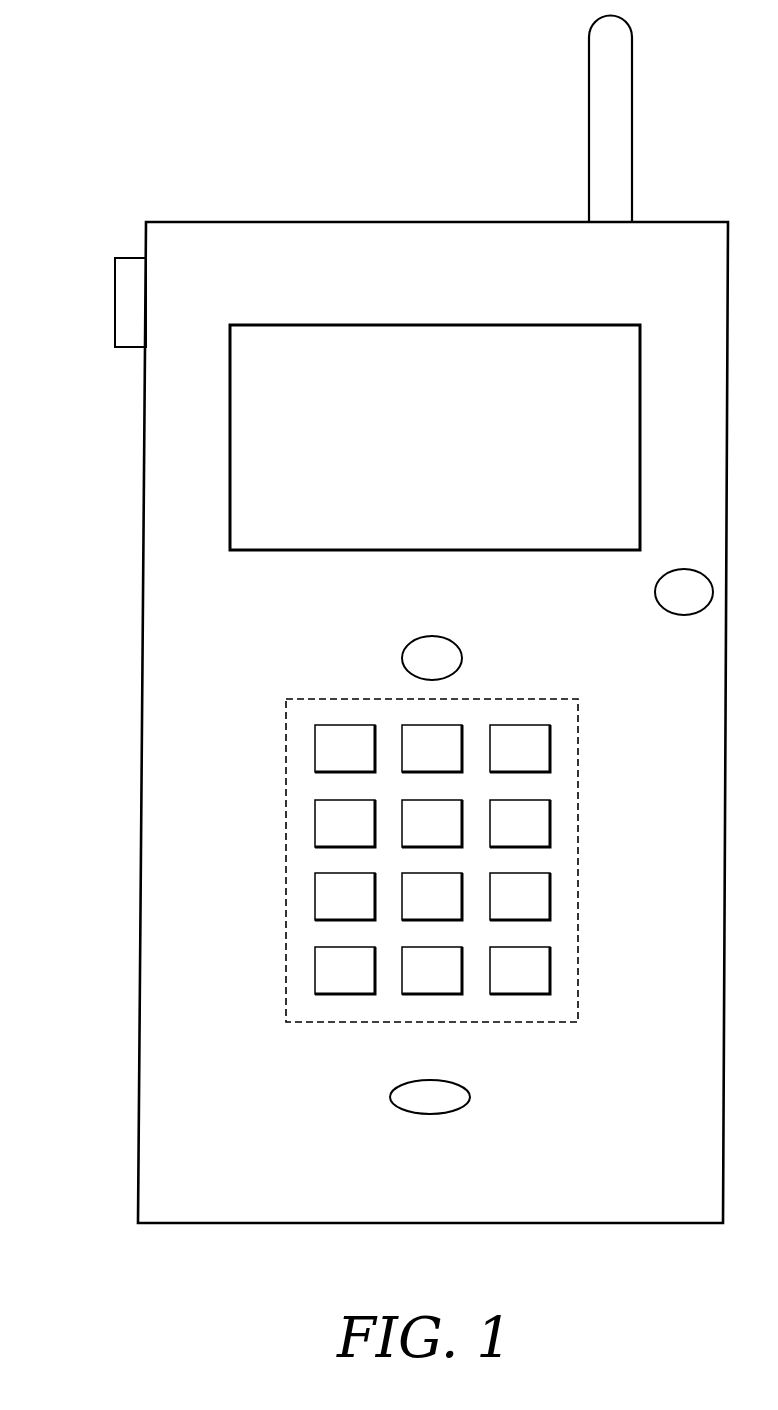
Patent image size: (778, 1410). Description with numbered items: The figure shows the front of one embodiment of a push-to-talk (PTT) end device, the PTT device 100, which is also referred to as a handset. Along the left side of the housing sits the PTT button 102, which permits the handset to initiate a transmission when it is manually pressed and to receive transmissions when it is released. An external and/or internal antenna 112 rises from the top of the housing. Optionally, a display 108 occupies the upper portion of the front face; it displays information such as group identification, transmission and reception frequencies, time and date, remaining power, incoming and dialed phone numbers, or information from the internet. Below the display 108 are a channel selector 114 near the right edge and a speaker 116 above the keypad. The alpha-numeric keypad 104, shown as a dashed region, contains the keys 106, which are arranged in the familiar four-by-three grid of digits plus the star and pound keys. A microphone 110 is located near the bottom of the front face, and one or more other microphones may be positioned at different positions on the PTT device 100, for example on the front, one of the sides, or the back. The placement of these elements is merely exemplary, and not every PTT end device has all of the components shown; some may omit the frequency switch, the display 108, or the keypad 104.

The PTT device 100 is at (682, 1186).
The PTT button 102 is at (115, 301).
The alpha-numeric keypad 104 is at (306, 696).
The keys 106 is at (300, 896).
The display 108 is at (248, 324).
The microphone 110 is at (390, 1098).
The antenna 112 is at (589, 88).
The channel selector 114 is at (655, 592).
The speaker 116 is at (433, 636).